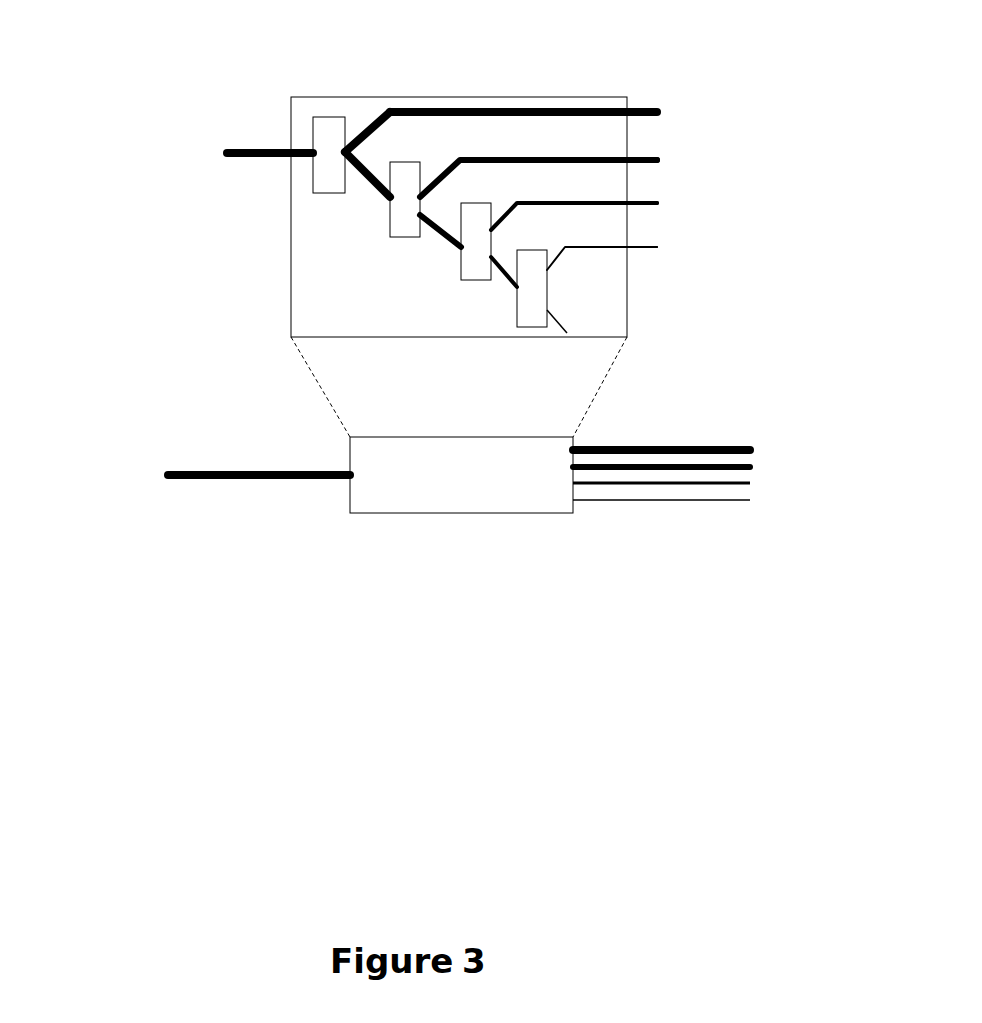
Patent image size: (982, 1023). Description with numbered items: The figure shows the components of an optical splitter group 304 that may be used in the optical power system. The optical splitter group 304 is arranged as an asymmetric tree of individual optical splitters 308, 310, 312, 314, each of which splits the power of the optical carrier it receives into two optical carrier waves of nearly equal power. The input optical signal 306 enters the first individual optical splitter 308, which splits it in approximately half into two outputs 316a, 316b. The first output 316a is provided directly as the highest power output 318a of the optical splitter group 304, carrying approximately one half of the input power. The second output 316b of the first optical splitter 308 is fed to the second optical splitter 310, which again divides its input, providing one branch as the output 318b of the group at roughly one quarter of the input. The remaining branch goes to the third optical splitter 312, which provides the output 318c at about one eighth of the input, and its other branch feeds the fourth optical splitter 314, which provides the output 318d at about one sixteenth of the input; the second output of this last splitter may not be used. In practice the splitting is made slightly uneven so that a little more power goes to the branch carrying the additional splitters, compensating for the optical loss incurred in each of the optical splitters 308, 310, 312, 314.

The optical splitter group 304 is at (408, 507).
The input optical signal 306 is at (137, 149).
The first individual optical splitter 308 is at (330, 193).
The second optical splitter 310 is at (407, 237).
The third optical splitter 312 is at (473, 280).
The fourth optical splitter 314 is at (537, 327).
The first output of the first optical splitter 316a is at (362, 134).
The second output of the first optical splitter 316b is at (375, 185).
The highest power output 318a is at (722, 113).
The second output of the optical splitter group 318b is at (722, 161).
The third output of the optical splitter group 318c is at (740, 204).
The fourth output of the optical splitter group 318d is at (740, 248).